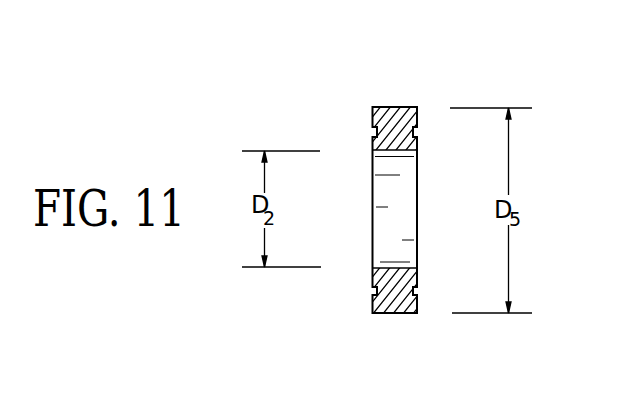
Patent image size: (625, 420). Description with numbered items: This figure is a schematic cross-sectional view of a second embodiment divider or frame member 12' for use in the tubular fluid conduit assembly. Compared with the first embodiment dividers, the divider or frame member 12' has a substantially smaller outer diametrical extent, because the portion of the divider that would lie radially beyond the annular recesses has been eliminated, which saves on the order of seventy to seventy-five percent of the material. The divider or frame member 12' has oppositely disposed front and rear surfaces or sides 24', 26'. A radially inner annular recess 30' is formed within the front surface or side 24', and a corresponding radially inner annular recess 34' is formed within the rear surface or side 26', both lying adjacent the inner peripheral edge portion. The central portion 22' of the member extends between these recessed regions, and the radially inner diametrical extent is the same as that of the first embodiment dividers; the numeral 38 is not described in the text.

The second embodiment divider or frame member 12' is at (404, 164).
The cylindrical center portion 22' is at (429, 203).
The front surface or side 24' is at (376, 120).
The rear surface or side 26' is at (407, 311).
The second, radially inner annular recess 30' is at (328, 325).
The second, radially inner annular recess 34' is at (452, 270).
The reference numeral 38 (partially shown) 38 is at (130, 0).